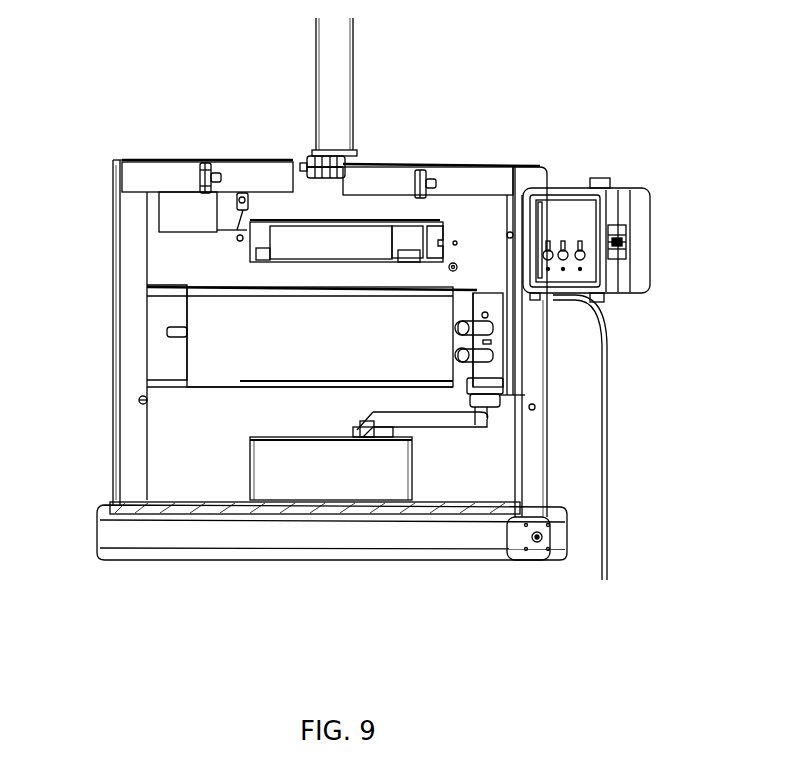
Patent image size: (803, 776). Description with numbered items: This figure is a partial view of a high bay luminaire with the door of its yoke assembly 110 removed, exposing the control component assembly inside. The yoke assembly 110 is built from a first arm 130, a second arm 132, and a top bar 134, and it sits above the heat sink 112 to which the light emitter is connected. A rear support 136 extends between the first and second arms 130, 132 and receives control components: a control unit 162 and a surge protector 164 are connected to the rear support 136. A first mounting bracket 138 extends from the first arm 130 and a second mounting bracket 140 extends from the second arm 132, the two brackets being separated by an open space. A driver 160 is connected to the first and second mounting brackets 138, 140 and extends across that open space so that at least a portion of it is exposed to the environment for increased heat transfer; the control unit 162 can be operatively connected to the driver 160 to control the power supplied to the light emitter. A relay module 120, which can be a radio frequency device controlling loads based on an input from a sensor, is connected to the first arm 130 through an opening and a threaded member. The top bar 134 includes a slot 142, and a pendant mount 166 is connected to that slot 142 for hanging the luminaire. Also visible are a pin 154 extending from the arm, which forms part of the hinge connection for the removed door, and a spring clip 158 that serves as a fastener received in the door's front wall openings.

The yoke assembly 110 is at (116, 158).
The heat sink 112 is at (205, 562).
The relay module 120 is at (648, 212).
The first arm 130 is at (540, 437).
The second arm 132 is at (130, 465).
The top bar 134 is at (165, 153).
The rear support 136 is at (487, 217).
The first mounting bracket 138 is at (508, 363).
The second mounting bracket 140 is at (163, 360).
The slot 142 is at (355, 165).
The pin 154 is at (140, 398).
The spring clip 158 is at (212, 165).
The driver 160 is at (220, 318).
The control unit 162 is at (417, 230).
The surge protector 164 is at (165, 217).
The pendant mount 166 is at (340, 137).